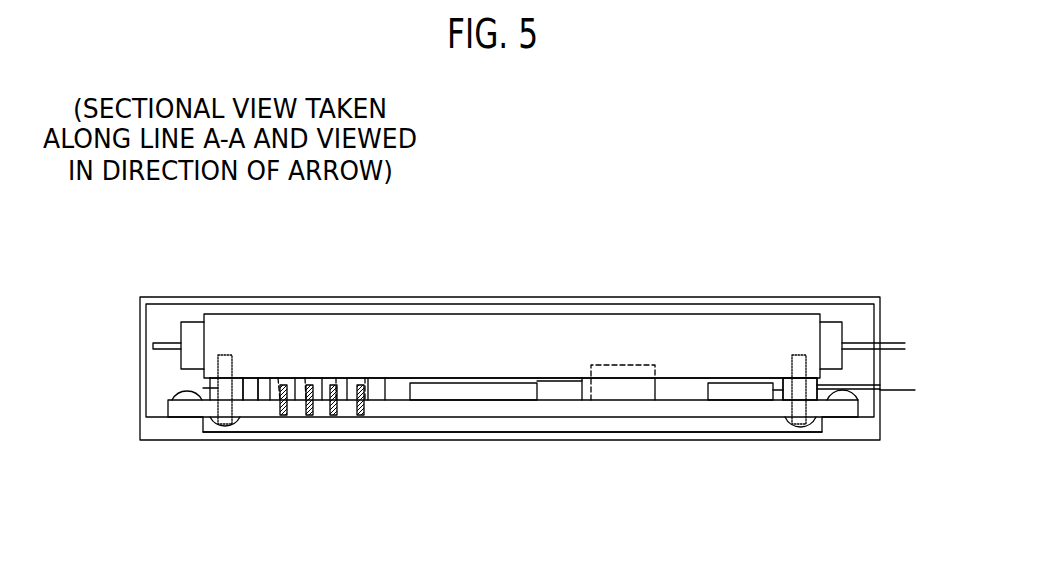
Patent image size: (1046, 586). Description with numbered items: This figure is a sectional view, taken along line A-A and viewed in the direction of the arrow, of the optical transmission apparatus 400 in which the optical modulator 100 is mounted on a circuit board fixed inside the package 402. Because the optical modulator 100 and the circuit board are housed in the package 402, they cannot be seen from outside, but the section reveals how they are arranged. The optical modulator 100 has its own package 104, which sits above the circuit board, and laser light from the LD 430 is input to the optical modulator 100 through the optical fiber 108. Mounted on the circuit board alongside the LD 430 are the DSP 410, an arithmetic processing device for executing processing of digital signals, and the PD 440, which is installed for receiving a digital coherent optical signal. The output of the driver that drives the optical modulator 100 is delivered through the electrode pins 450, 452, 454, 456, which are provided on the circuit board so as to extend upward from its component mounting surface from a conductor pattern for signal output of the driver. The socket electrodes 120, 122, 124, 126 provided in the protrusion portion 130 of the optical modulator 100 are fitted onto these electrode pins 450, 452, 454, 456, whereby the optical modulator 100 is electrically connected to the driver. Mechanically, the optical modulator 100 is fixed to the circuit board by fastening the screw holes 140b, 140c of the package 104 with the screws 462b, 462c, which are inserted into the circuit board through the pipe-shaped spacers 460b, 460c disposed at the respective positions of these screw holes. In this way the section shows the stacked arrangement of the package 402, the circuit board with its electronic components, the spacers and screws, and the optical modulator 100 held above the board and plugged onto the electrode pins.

The optical transmission apparatus 400 is at (252, 88).
The package 402 is at (499, 334).
The optical modulator 100 is at (512, 281).
The package 104 is at (529, 293).
The optical fiber 108 is at (512, 473).
The socket electrode 120 is at (254, 316).
The socket electrode 122 is at (289, 311).
The socket electrode 124 is at (330, 316).
The socket electrode 126 is at (374, 311).
The protrusion portion 130 is at (263, 393).
The screw hole 140b is at (205, 400).
The screw hole 140c is at (858, 407).
The DSP 410 is at (473, 456).
The LD 430 is at (623, 444).
The PD 440 is at (745, 453).
The electrode pin 450 is at (269, 443).
The electrode pin 452 is at (306, 456).
The electrode pin 454 is at (351, 456).
The electrode pin 456 is at (384, 443).
The pipe-shaped spacer 460b is at (135, 382).
The pipe-shaped spacer 460c is at (887, 371).
The screw 462b is at (205, 428).
The screw 462c is at (815, 427).